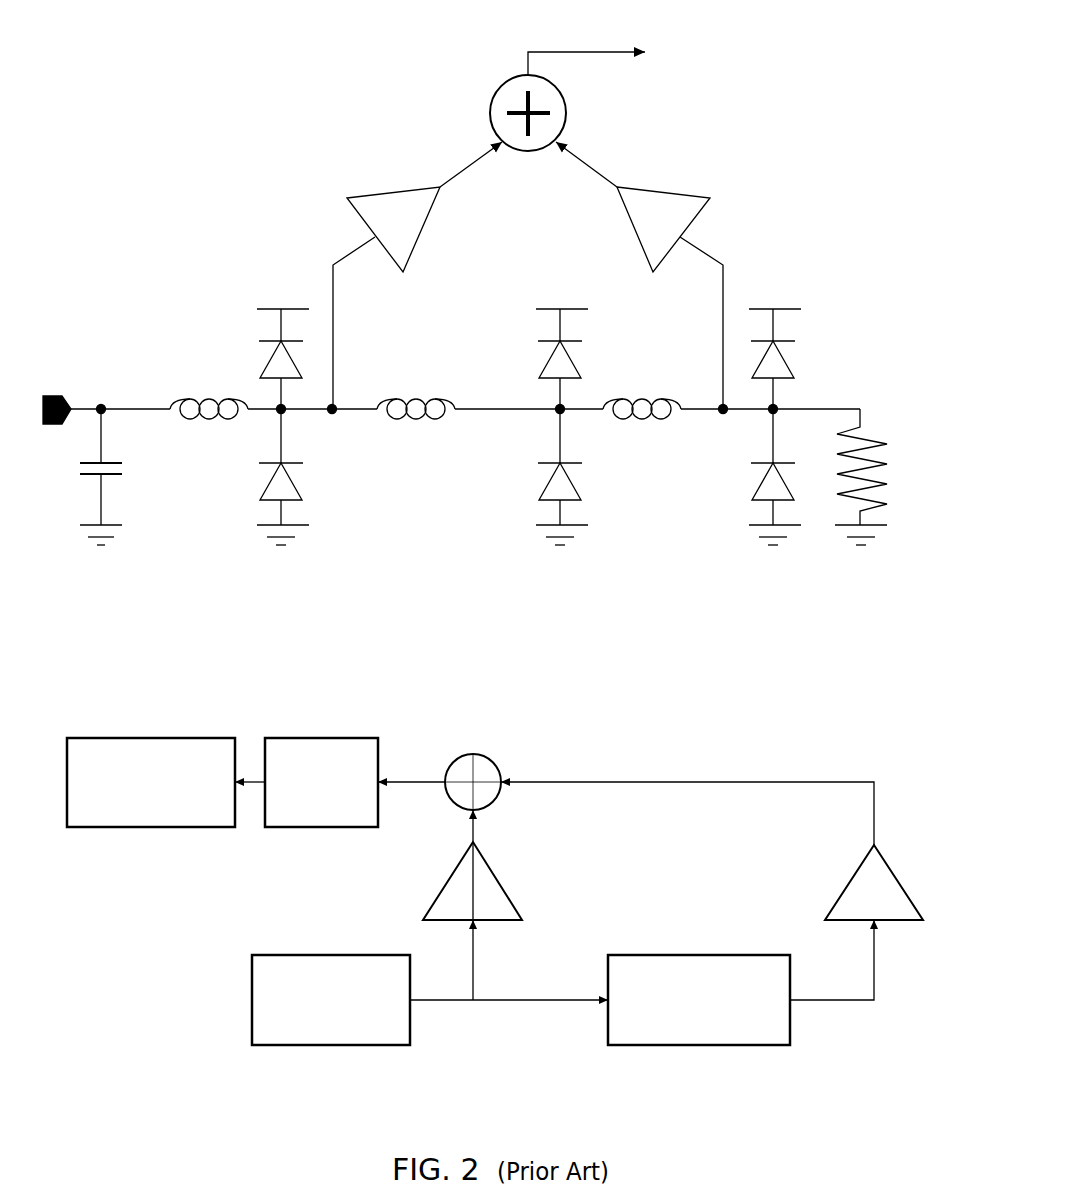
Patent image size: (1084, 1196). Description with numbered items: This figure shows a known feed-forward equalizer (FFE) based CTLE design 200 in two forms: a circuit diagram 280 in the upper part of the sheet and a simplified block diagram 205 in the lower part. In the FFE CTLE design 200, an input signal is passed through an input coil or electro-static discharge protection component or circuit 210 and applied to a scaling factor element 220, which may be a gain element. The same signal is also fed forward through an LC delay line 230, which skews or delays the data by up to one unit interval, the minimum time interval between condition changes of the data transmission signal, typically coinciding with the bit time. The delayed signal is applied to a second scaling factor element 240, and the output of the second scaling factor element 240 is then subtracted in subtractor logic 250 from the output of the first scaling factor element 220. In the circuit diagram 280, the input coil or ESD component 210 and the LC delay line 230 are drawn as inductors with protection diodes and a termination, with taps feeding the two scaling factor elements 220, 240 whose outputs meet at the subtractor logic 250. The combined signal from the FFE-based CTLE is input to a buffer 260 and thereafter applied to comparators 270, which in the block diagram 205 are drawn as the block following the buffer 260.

The feed-forward equalizer based CTLE design 200 is at (123, 113).
The simplified block diagram 205 is at (257, 687).
The input coil or electro-static discharge protection component or circuit 210 is at (140, 355).
The scaling factor element 220 is at (387, 192).
The LC delay line 230 is at (491, 355).
The second scaling factor element 240 is at (658, 192).
The subtractor logic 250 is at (490, 107).
The buffer 260 is at (317, 828).
The comparators 270 is at (142, 828).
The circuit diagram 280 is at (282, 157).